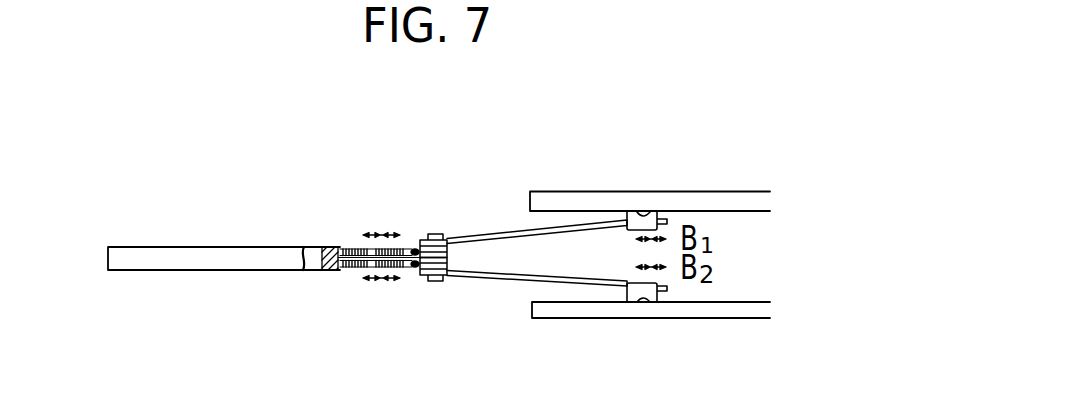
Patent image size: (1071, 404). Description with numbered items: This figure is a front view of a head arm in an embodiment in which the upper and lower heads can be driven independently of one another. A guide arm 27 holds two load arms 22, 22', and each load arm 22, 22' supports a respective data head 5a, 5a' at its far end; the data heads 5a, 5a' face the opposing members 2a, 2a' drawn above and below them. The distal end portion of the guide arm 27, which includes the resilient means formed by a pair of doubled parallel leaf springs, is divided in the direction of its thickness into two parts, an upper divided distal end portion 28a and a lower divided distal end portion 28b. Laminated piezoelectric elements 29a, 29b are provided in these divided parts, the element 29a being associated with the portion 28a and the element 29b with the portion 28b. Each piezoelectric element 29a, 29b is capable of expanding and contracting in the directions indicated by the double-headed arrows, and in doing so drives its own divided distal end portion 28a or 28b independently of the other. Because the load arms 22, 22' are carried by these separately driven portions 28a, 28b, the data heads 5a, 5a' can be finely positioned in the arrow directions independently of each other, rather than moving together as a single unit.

The guide arm 27 is at (173, 262).
The laminated piezoelectric element 29a is at (348, 247).
The laminated piezoelectric element 29b is at (345, 278).
The divided distal end portion 28a is at (415, 248).
The divided distal end portion 28b is at (412, 272).
The load arm 22 is at (535, 204).
The load arm 22' is at (533, 307).
The upper plate 2a is at (634, 170).
The lower plate 2a' is at (635, 344).
The data head 5a is at (647, 180).
The data head 5a' is at (655, 334).